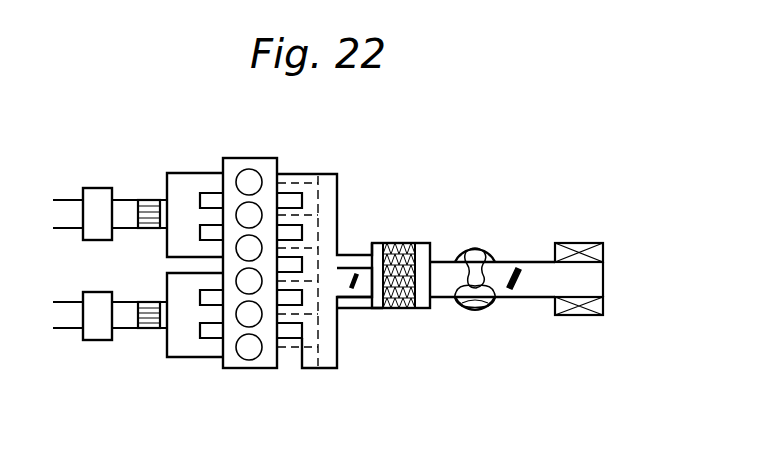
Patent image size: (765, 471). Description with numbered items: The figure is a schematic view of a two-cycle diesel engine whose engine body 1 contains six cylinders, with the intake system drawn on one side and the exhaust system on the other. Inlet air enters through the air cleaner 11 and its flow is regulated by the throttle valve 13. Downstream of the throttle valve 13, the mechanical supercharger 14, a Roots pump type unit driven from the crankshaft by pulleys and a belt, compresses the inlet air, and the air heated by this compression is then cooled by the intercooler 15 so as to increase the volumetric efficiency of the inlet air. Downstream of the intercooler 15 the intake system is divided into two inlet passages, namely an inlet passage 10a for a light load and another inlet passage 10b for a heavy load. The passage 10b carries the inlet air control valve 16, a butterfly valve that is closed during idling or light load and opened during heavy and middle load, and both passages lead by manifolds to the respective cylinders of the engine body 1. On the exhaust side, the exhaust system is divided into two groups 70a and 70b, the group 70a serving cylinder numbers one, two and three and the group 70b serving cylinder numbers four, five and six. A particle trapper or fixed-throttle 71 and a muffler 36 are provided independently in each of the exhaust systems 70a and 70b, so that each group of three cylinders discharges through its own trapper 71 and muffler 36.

The engine body 1 is at (254, 157).
The inlet passage for light load 10a is at (352, 254).
The inlet passage for heavy load 10b is at (343, 298).
The air cleaner 11 is at (580, 242).
The throttle valve 13 is at (514, 290).
The mechanical supercharger 14 is at (471, 309).
The intercooler 15 is at (400, 242).
The inlet air control valve 16 is at (358, 290).
The muffler 36 is at (95, 192).
The first exhaust system group 70a is at (187, 172).
The second exhaust system group 70b is at (195, 358).
The particle trapper or fixed-throttle 71 is at (147, 204).